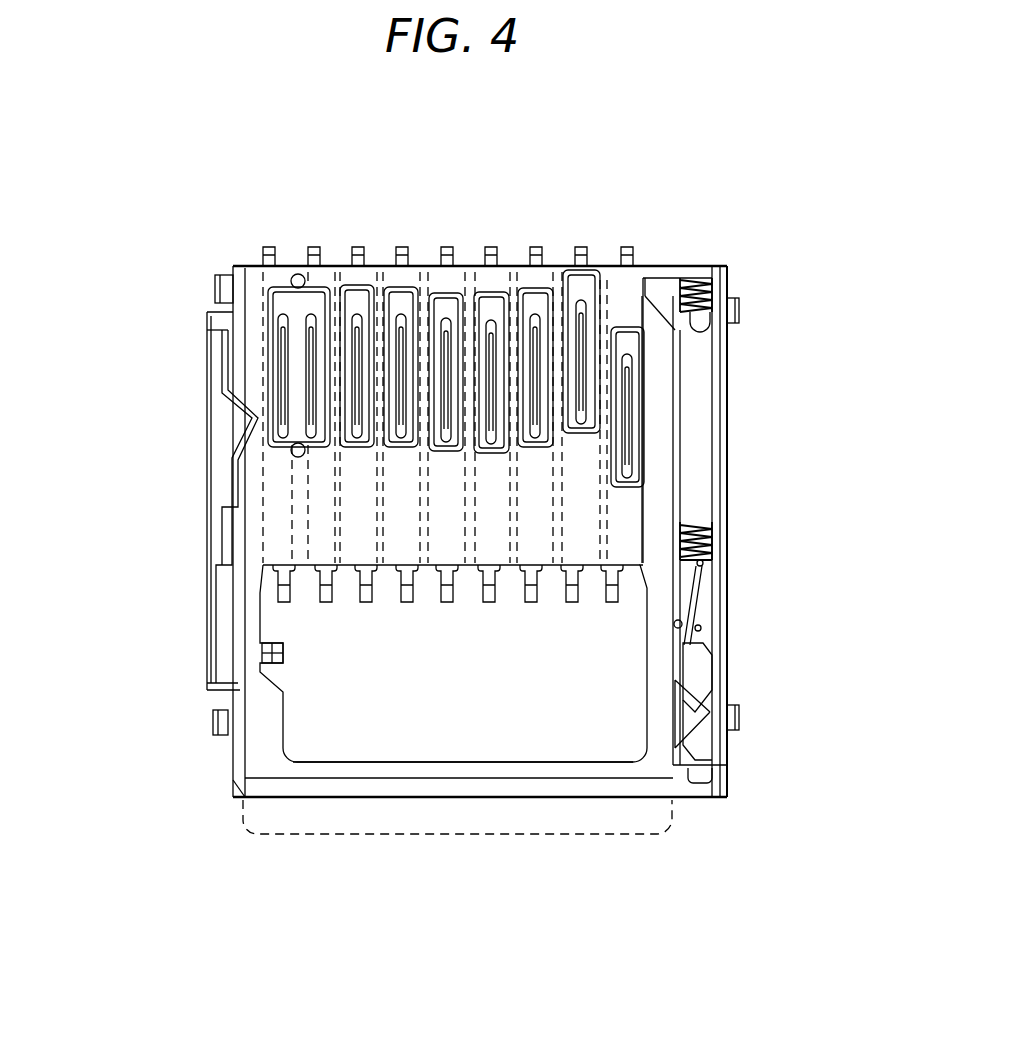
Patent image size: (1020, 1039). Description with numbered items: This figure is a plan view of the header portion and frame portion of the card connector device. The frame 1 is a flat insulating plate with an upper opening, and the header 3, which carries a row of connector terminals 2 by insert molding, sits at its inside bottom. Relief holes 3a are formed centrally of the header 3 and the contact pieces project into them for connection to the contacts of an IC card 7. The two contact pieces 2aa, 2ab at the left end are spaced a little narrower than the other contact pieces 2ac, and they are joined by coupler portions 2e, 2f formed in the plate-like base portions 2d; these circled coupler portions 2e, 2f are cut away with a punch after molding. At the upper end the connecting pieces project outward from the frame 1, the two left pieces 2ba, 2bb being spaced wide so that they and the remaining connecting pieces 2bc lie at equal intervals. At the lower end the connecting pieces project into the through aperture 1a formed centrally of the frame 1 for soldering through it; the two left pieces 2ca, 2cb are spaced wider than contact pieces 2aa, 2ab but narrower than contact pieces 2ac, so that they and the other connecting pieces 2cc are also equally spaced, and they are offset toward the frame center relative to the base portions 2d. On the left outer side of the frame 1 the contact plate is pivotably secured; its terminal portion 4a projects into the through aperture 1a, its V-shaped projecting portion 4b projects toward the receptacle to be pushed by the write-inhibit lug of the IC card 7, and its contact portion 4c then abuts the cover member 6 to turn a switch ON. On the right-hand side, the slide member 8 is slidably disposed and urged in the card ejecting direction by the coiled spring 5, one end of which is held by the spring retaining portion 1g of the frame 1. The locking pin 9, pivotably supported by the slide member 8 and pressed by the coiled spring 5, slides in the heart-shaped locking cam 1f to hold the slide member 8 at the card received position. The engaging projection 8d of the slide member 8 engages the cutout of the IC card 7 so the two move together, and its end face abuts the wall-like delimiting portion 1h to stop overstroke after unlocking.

The frame 1 is at (500, 800).
The through aperture 1a is at (630, 745).
The locking cam 1f is at (704, 677).
The spring retaining portion 1g is at (702, 322).
The wall-like delimiting portion 1h is at (675, 272).
The connector terminals 2 is at (648, 460).
The contact piece 2aa is at (282, 290).
The contact piece 2ab is at (333, 290).
The contact pieces 2ac is at (360, 302).
The connecting piece 2ba is at (268, 247).
The connecting piece 2bb is at (313, 247).
The connecting pieces 2bc is at (358, 247).
The connecting piece 2ca is at (289, 600).
The connecting piece 2cb is at (331, 598).
The connecting pieces 2cc is at (371, 597).
The base portions 2d is at (623, 527).
The coupler portion 2e is at (297, 290).
The coupler portion 2f is at (297, 458).
The header 3 is at (509, 262).
The relief holes 3a is at (450, 292).
The terminal portion 4a is at (284, 663).
The projecting portion 4b is at (228, 418).
The contact portion 4c is at (232, 327).
The coiled spring 5 is at (713, 285).
The cover member 6 is at (208, 684).
The IC card 7 is at (318, 815).
The slide member 8 is at (696, 368).
The engaging projection 8d is at (664, 310).
The locking pin 9 is at (694, 607).